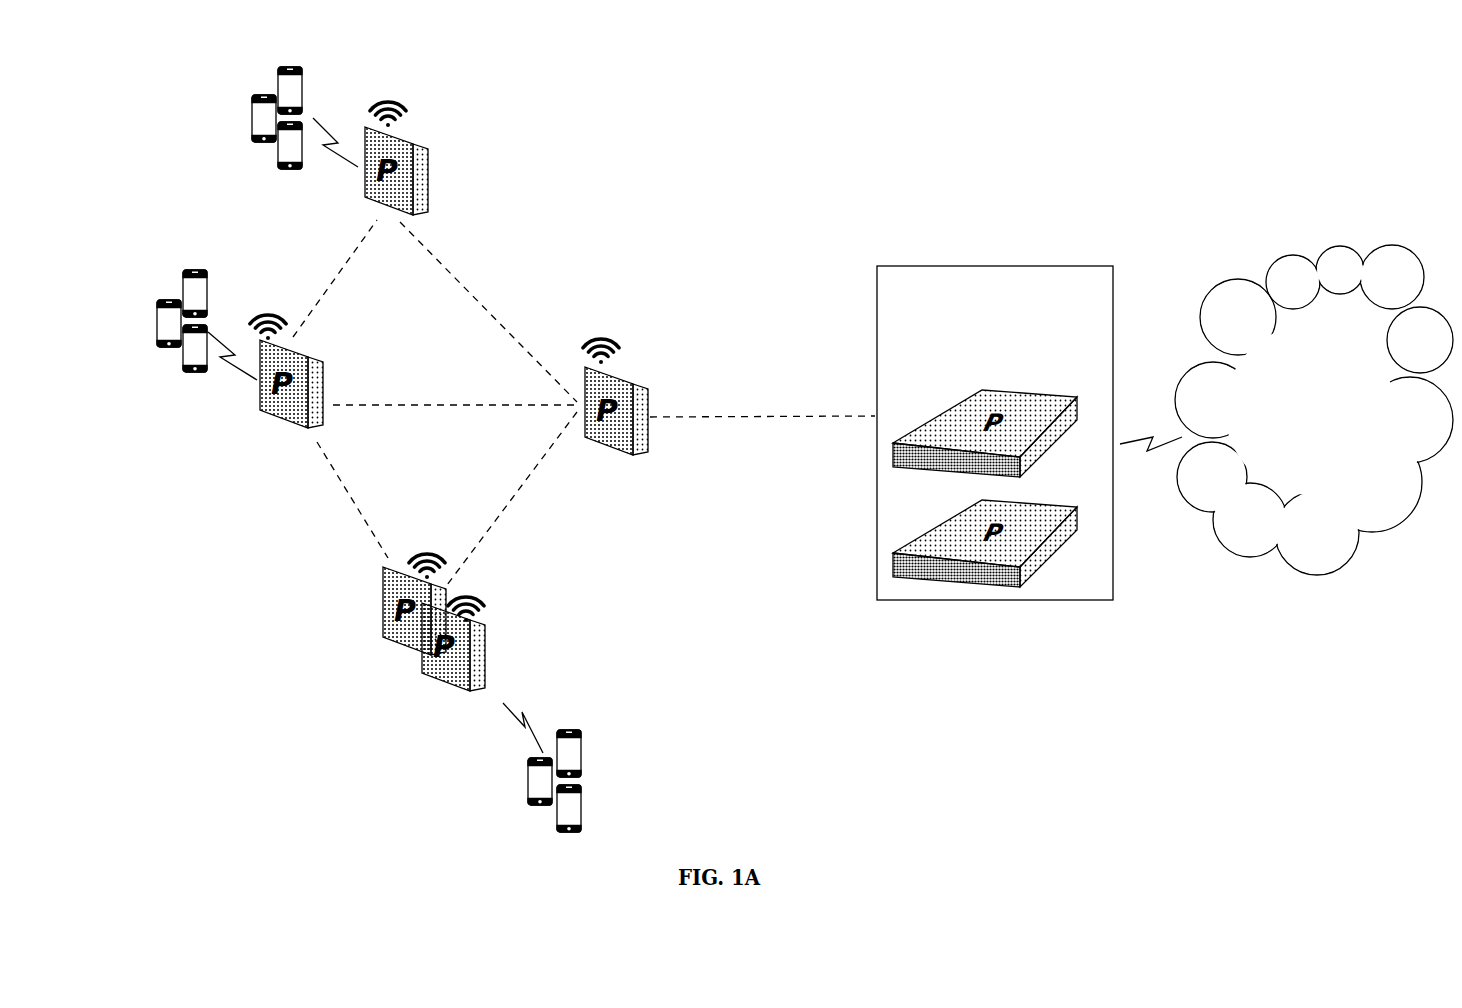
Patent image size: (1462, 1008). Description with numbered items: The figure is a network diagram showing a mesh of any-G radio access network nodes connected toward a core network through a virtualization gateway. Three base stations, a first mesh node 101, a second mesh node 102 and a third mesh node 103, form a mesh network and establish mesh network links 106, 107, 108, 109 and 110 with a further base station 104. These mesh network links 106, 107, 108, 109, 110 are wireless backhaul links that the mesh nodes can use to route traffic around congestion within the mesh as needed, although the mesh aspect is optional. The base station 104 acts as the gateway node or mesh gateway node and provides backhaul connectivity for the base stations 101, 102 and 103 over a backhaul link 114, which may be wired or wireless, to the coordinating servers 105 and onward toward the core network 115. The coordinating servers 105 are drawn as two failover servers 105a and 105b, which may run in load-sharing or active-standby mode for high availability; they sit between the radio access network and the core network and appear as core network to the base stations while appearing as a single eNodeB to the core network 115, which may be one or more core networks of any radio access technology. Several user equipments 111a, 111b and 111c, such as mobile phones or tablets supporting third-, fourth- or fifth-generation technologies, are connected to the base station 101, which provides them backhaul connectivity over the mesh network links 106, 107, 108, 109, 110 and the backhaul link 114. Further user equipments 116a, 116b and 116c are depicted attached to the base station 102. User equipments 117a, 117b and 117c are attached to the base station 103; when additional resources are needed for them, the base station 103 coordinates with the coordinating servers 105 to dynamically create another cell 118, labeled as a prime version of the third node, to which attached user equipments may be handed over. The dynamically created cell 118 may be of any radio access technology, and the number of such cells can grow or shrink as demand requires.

The mesh node 1 101 is at (418, 138).
The mesh node 2 102 is at (260, 415).
The mesh node 3 103 is at (395, 653).
The base station 104 is at (633, 372).
The coordinating server 105 is at (962, 262).
The coordinating server 105a is at (1053, 390).
The coordinating server 105b is at (1053, 502).
The mesh network link 106 is at (333, 293).
The mesh network link 107 is at (503, 313).
The mesh network link 108 is at (340, 497).
The mesh network link 109 is at (525, 488).
The mesh network link 110 is at (447, 397).
The user equipment 111a is at (250, 102).
The user equipment 111b is at (277, 167).
The user equipment 111c is at (303, 90).
The backhaul link 114 is at (782, 425).
The core network 115 is at (1315, 252).
The 4G user equipment 116a is at (152, 327).
The 3G user equipment 116b is at (190, 268).
The 5G user equipment 116c is at (178, 355).
The user equipment 117a is at (523, 775).
The user equipment 117b is at (567, 837).
The user equipment 117c is at (565, 725).
The dynamically created cell 118 is at (458, 700).